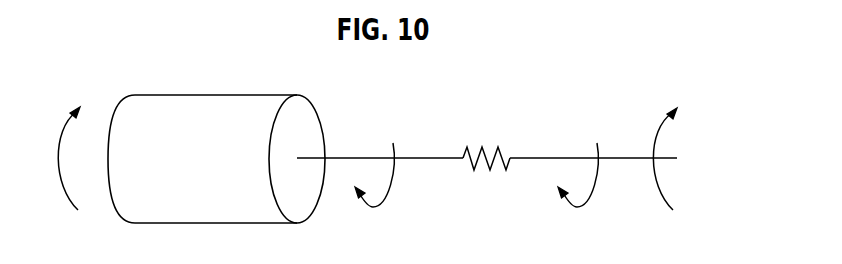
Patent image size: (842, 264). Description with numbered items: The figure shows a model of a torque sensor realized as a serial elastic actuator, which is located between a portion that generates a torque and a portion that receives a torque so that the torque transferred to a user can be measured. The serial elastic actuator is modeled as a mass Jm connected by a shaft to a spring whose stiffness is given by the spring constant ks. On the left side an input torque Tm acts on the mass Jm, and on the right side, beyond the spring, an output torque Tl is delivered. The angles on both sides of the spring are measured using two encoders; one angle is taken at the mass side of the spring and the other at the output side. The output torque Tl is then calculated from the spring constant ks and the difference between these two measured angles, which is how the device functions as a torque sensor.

The mass Jm is at (216, 159).
The input torque Tm is at (77, 158).
The spring constant ks is at (486, 145).
The output torque Tl is at (680, 159).